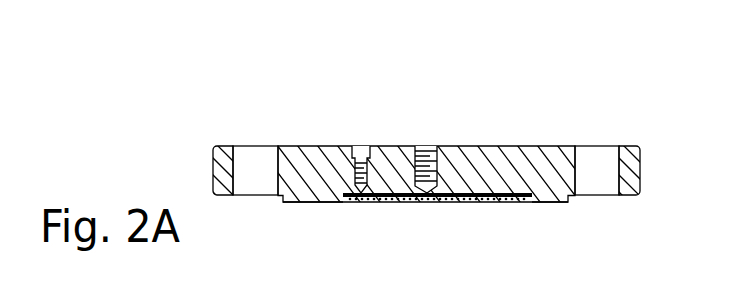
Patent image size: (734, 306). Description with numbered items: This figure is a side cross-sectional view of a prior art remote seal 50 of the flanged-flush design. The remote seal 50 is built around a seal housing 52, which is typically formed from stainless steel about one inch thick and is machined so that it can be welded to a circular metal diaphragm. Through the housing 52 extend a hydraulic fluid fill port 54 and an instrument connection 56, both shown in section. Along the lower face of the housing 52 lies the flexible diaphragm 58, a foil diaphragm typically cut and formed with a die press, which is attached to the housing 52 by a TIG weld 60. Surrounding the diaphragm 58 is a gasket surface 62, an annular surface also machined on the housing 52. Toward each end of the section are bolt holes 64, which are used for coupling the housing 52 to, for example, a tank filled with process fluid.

The remote seal 50 is at (255, 93).
The seal housing 52 is at (642, 165).
The hydraulic fluid fill port 54 is at (362, 157).
The instrument connection 56 is at (434, 148).
The flexible diaphragm 58 is at (470, 201).
The TIG weld 60 is at (333, 201).
The gasket surface 62 is at (550, 201).
The bolt holes 64 is at (250, 157).